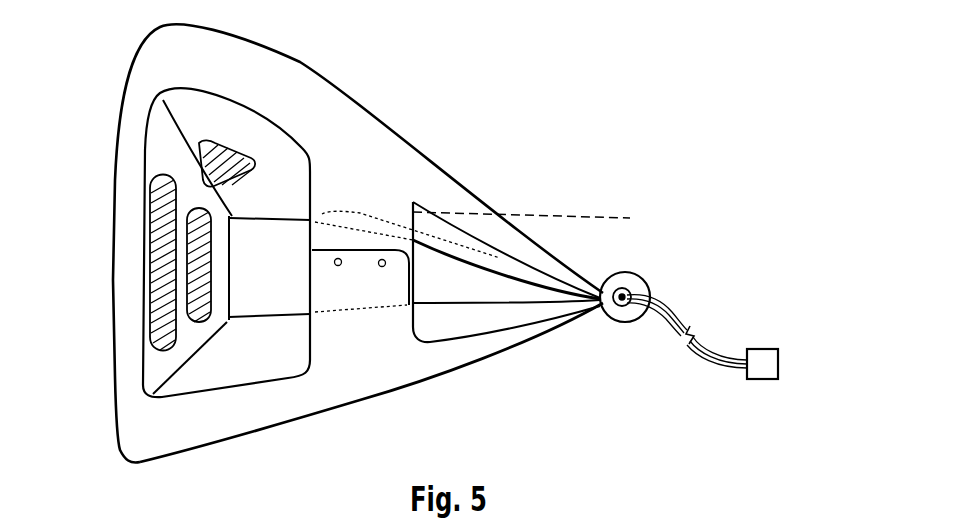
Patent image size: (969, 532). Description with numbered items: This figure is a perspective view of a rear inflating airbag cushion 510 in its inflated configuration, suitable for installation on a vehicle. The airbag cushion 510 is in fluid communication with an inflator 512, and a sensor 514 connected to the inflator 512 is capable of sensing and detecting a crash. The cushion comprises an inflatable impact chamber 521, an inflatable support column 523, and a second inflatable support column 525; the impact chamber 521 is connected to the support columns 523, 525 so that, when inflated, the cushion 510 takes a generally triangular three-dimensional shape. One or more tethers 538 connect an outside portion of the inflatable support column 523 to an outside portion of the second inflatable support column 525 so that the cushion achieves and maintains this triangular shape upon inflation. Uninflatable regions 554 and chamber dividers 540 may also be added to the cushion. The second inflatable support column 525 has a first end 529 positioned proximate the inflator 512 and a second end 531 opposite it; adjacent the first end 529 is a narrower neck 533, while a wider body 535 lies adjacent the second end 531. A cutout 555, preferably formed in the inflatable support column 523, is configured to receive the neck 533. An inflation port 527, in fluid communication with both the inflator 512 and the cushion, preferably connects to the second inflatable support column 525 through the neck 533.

The airbag cushion 510 is at (533, 159).
The inflator 512 is at (633, 280).
The sensor 514 is at (762, 357).
The inflatable impact chamber 521 is at (120, 307).
The inflatable support column 523 is at (297, 84).
The second inflatable support column 525 is at (253, 436).
The inflation port 527 is at (596, 316).
The first end 529 is at (575, 340).
The second end 531 is at (183, 438).
The neck 533 is at (547, 340).
The body 535 is at (370, 143).
The tethers 538 is at (340, 232).
The chamber dividers 540 is at (160, 205).
The uninflatable regions 554 is at (211, 145).
The cutout 555 is at (539, 216).